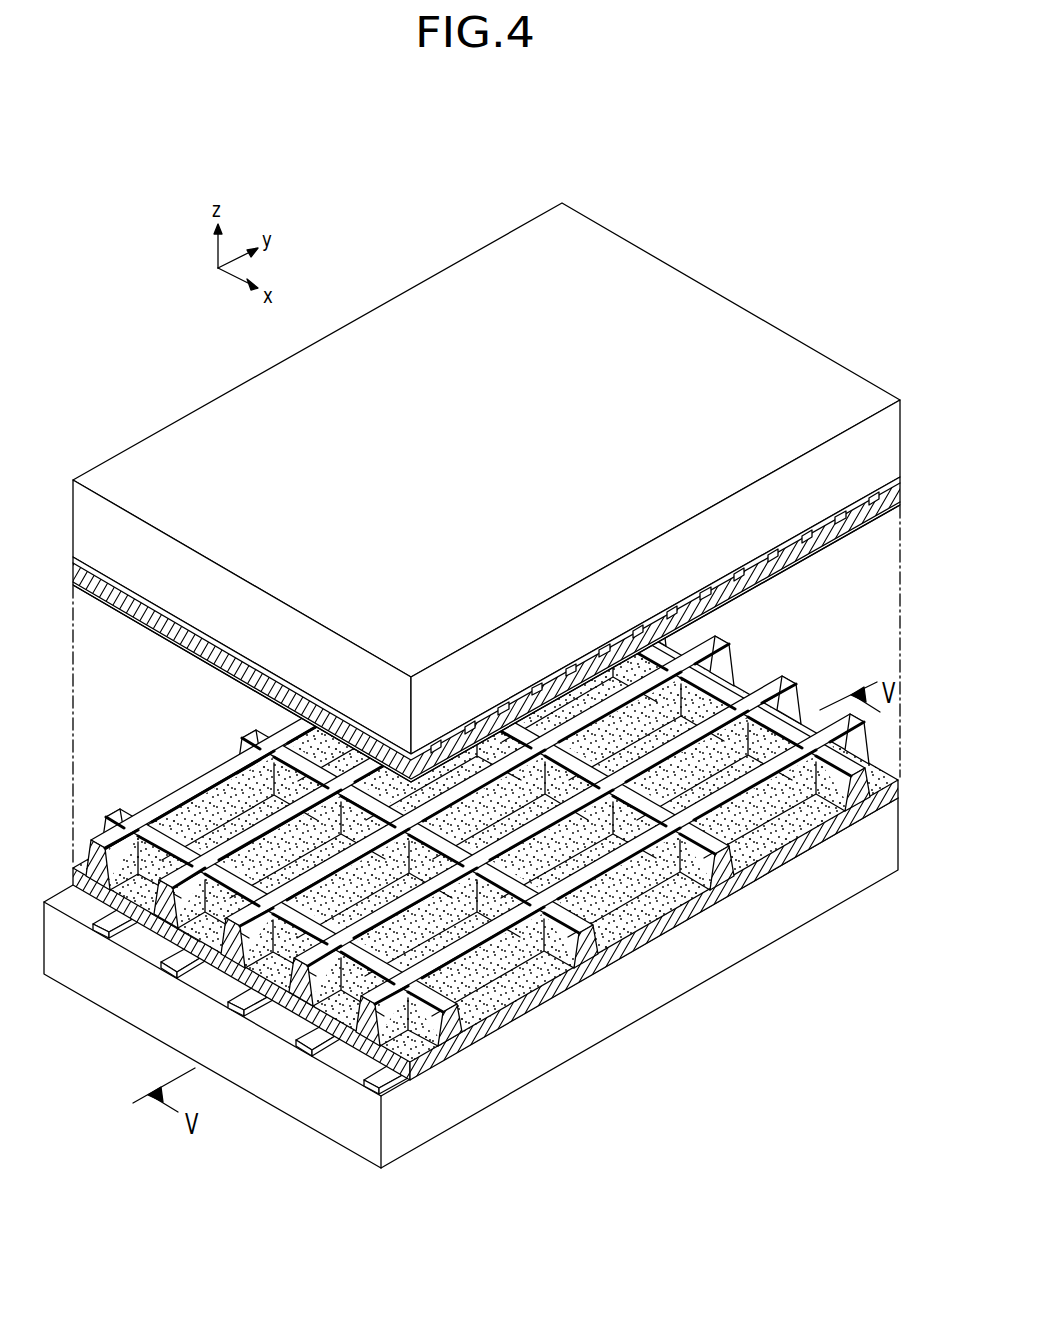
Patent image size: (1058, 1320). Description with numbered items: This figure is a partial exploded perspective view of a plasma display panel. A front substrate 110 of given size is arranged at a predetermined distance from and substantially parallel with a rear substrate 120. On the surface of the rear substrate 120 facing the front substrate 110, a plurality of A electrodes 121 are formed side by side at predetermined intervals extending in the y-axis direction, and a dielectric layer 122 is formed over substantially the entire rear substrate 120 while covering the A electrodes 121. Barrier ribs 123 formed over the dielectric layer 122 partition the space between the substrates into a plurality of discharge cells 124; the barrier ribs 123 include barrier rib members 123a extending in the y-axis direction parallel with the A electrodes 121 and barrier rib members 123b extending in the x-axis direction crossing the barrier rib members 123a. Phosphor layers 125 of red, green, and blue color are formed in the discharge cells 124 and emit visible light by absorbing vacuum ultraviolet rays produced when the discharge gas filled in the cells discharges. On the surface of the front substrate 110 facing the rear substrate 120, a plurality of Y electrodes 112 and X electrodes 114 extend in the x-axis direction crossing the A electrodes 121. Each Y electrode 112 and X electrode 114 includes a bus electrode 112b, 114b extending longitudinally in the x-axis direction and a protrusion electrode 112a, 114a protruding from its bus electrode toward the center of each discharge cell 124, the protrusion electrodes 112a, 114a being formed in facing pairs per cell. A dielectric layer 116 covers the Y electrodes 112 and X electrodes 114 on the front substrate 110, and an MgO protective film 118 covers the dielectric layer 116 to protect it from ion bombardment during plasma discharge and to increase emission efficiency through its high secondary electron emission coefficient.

The front substrate 110 is at (675, 287).
The Y electrode 112 is at (672, 568).
The protrusion electrode 112a is at (735, 570).
The bus electrode 112b is at (696, 594).
The X electrode 114 is at (638, 551).
The protrusion electrode 114a is at (813, 515).
The bus electrode 114b is at (840, 500).
The dielectric layer 116 is at (160, 616).
The MgO protective film 118 is at (195, 653).
The rear substrate 120 is at (743, 935).
The A electrode 121 is at (373, 1080).
The dielectric layer 122 is at (642, 945).
The barrier rib 123 is at (478, 802).
The barrier rib member 123a is at (188, 796).
The barrier rib member 123b is at (155, 834).
The discharge cell 124 is at (272, 812).
The phosphor layer 125 is at (187, 948).